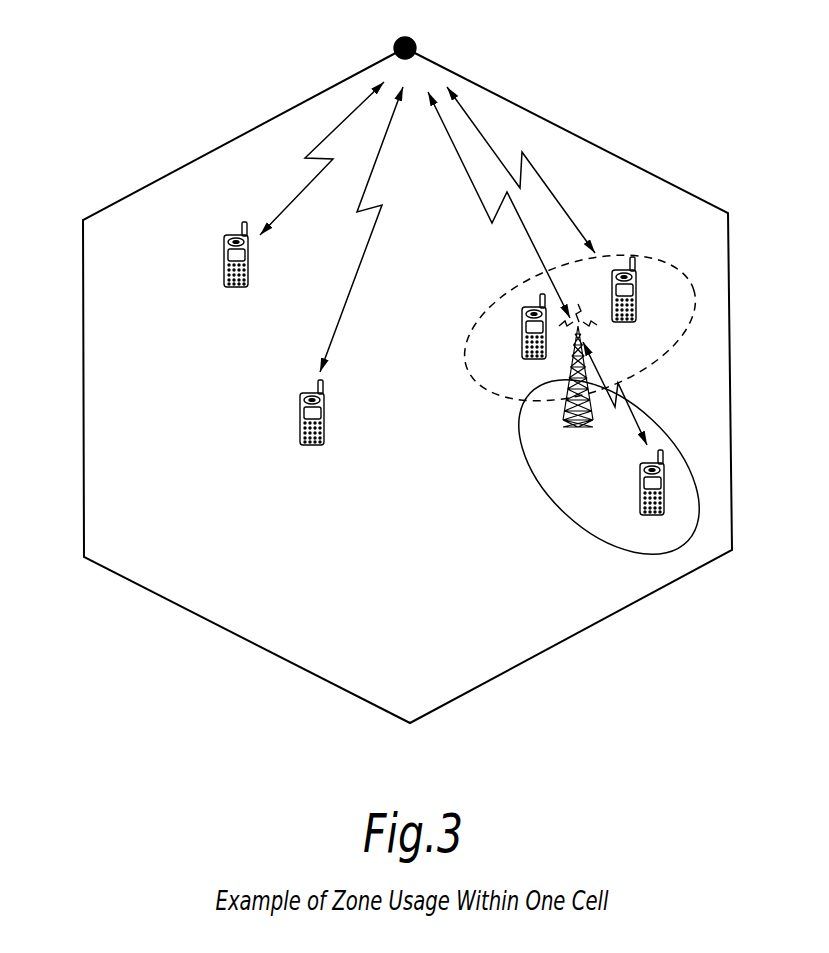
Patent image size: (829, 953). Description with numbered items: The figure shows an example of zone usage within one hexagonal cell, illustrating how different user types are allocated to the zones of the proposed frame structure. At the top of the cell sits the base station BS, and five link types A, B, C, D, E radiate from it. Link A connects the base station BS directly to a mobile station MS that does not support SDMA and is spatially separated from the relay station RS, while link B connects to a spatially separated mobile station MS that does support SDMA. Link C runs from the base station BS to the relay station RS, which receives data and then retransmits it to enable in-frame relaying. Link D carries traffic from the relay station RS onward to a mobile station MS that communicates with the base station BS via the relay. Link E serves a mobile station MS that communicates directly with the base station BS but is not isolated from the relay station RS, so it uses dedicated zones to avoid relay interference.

The base station BS is at (404, 33).
The mobile station MS is at (421, 386).
The relay station RS is at (578, 381).
The link type A is at (322, 158).
The link type B is at (361, 229).
The link type C is at (501, 205).
The link type D is at (626, 393).
The link type E is at (524, 170).